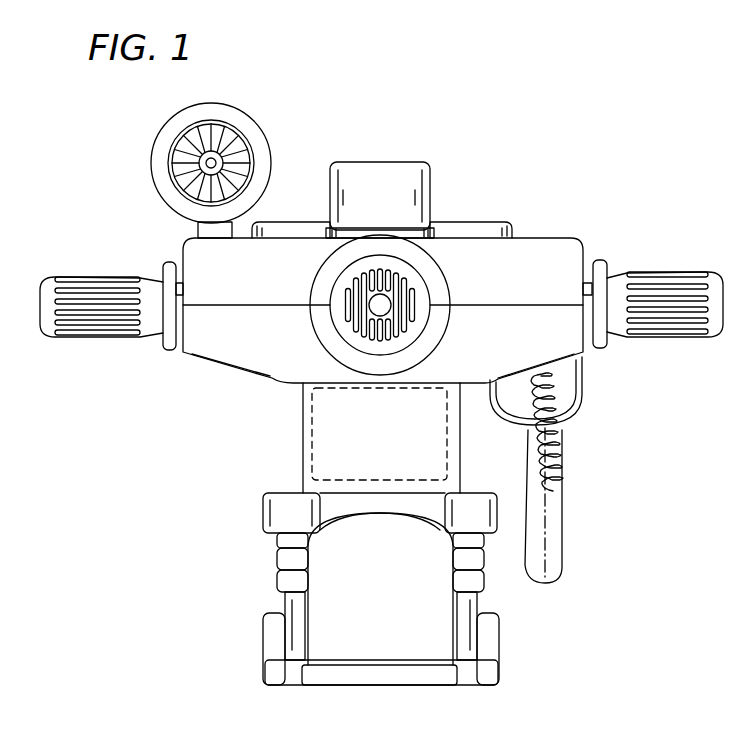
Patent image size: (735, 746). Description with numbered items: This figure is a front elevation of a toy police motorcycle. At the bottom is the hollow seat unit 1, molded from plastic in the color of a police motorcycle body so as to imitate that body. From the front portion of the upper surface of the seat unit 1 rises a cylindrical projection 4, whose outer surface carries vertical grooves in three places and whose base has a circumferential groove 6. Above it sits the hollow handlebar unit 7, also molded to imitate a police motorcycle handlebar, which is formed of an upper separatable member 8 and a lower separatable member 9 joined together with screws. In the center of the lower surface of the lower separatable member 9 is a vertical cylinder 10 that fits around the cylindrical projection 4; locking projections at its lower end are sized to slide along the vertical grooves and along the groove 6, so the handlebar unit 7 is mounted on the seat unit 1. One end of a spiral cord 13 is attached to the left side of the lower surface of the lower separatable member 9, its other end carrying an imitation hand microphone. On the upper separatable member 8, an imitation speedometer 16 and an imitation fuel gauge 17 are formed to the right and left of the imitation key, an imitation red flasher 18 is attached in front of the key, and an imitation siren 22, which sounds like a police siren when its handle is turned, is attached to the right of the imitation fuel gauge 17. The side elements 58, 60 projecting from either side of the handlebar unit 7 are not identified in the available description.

The hollow seat unit 1 is at (392, 614).
The cylindrical projection 4 is at (312, 418).
The groove 6 is at (456, 489).
The hollow handlebar unit 7 is at (553, 238).
The upper separatable member 8 is at (520, 294).
The lower separatable member 9 is at (520, 344).
The vertical cylinder 10 is at (303, 461).
The spiral cord 13 is at (568, 425).
The imitation speedometer 16 is at (483, 222).
The imitation fuel gauge 17 is at (286, 222).
The imitation red flasher 18 is at (391, 162).
The imitation siren 22 is at (248, 112).
The left knob 58 is at (94, 278).
The right knob 60 is at (675, 273).